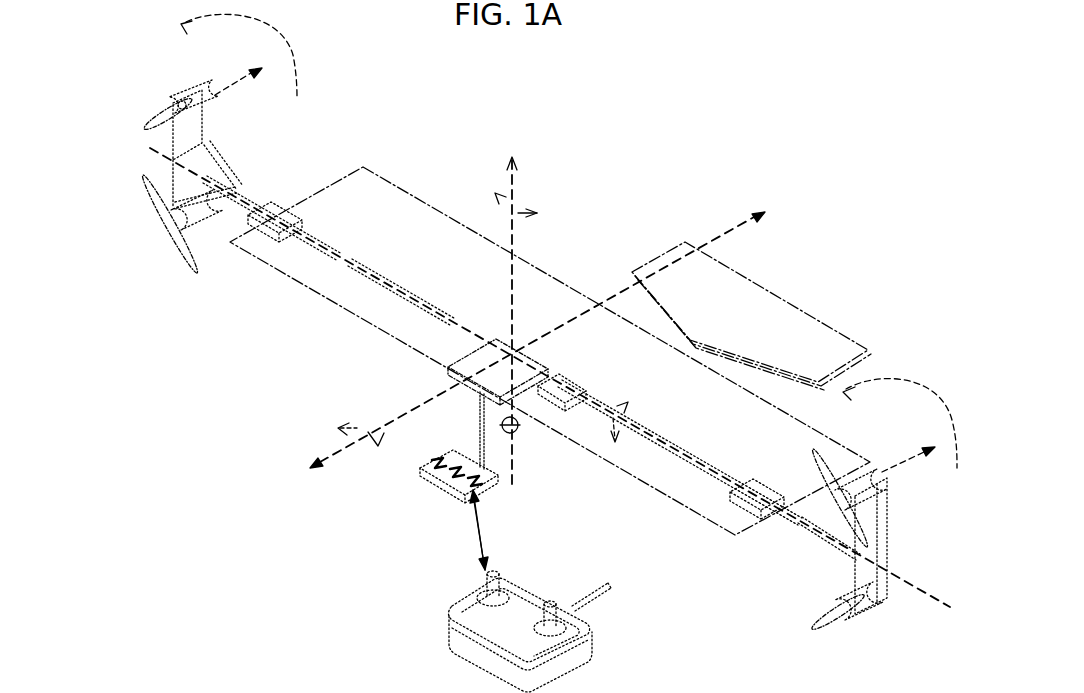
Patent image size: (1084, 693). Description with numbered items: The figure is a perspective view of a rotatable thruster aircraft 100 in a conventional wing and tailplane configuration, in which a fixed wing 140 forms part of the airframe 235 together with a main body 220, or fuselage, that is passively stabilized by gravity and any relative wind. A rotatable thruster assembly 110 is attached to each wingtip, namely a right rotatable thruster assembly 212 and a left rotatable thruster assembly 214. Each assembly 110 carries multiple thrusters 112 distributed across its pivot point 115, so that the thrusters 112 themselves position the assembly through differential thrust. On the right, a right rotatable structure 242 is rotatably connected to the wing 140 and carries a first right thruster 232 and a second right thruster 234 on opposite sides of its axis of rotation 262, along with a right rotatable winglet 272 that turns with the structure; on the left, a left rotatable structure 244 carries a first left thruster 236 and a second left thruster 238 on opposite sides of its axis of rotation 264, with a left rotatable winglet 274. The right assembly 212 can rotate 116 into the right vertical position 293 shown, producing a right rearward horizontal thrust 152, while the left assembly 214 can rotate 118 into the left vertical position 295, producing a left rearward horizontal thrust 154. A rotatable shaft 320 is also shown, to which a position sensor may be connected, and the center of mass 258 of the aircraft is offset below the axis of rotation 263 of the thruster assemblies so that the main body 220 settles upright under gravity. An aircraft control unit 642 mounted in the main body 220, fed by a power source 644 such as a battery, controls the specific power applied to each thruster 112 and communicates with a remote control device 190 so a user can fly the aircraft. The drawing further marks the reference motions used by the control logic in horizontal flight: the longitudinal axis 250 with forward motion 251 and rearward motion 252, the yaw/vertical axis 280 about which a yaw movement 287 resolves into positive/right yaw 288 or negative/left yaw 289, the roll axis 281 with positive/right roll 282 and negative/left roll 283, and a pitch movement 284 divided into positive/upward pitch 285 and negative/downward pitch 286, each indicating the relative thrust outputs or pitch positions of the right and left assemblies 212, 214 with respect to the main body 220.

The rotatable thruster aircraft 100 is at (264, 566).
The rotatable thruster assembly 110 is at (149, 298).
The thruster 112 is at (162, 108).
The pivot point 115 is at (866, 578).
The rotation of right rotatable thruster assembly 116 is at (297, 58).
The rotation of left rotatable thruster assembly 118 is at (912, 385).
The wing 140 is at (365, 166).
The right rearward horizontal thrust 152 is at (235, 88).
The left rearward horizontal thrust 154 is at (903, 454).
The remote control device 190 is at (537, 587).
The right rotatable thruster assembly 212 is at (120, 214).
The left rotatable thruster assembly 214 is at (804, 643).
The main body 220 is at (480, 420).
The first right thruster 232 is at (167, 245).
The second right thruster 234 is at (140, 128).
The airframe 235 is at (424, 527).
The first left thruster 236 is at (808, 624).
The second left thruster 238 is at (815, 455).
The right rotatable structure 242 is at (216, 122).
The left rotatable structure 244 is at (892, 500).
The longitudinal axis 250 is at (331, 450).
The forward motion 251 is at (300, 470).
The rearward motion 252 is at (758, 204).
The center of mass 258 is at (517, 437).
The axis of rotation of right rotatable structure 262 is at (236, 207).
The axis of rotation of rotatable thruster assemblies 263 is at (418, 297).
The axis of rotation of left rotatable structure 264 is at (793, 521).
The right rotatable winglet 272 is at (232, 160).
The left rotatable winglet 274 is at (840, 533).
The yaw/vertical axis 280 is at (507, 304).
The roll axis 281 is at (376, 437).
The positive/right roll 282 is at (343, 425).
The negative/left roll 283 is at (372, 450).
The pitch movement 284 is at (614, 420).
The positive/upward pitch 285 is at (634, 398).
The negative/downward pitch 286 is at (620, 448).
The yaw movement 287 is at (518, 210).
The positive/right yaw 288 is at (496, 195).
The negative/left yaw 289 is at (540, 213).
The right vertical position 293 is at (329, 96).
The left vertical position 295 is at (766, 640).
The rotatable shaft 320 is at (353, 244).
The aircraft control unit 642 is at (490, 490).
The power source 644 is at (430, 477).